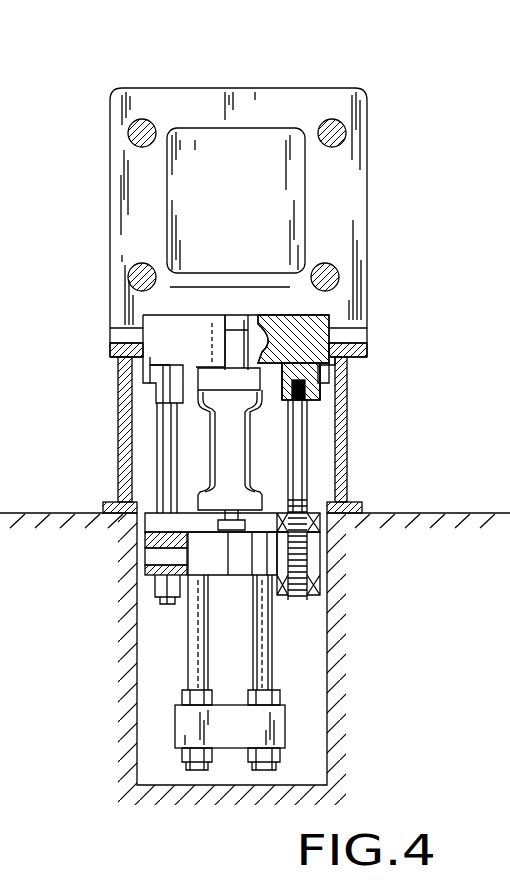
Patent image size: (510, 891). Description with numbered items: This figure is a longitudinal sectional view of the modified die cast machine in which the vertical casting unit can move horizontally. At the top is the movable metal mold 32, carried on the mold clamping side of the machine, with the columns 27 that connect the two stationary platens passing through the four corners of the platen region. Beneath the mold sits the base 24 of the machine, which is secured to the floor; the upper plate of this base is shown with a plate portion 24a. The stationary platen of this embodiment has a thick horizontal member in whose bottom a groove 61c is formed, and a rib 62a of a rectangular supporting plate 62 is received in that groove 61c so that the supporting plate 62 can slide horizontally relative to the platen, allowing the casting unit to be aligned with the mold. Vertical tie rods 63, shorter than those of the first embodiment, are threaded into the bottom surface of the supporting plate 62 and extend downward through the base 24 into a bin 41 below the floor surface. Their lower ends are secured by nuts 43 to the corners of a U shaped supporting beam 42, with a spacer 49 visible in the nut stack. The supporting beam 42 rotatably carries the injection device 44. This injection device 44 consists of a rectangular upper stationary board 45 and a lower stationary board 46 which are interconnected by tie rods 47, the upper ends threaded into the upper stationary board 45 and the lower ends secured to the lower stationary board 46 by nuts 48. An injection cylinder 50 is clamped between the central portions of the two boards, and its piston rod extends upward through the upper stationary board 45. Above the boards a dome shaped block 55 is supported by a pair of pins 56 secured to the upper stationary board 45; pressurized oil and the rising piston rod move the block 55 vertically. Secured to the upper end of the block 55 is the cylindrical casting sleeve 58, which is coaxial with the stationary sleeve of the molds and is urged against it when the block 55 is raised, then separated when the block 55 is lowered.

The base 24 is at (368, 391).
The flange plate 24a is at (352, 352).
The columns 27 is at (137, 120).
The movable metal mold 32 is at (246, 128).
The bin 41 is at (330, 676).
The supporting beam 42 is at (150, 584).
The nuts 43 is at (145, 538).
The injection device 44 is at (176, 449).
The upper stationary board 45 is at (228, 575).
The lower stationary board 46 is at (232, 748).
The tie rods 47 is at (188, 653).
The nuts 48 is at (182, 696).
The vertical pin 49 is at (146, 558).
The injection cylinder 50 is at (263, 631).
The dome shaped block 55 is at (210, 448).
The pins 56 is at (236, 506).
The casting sleeve 58 is at (238, 330).
The groove 61c is at (155, 372).
The supporting plate 62 is at (132, 388).
The rib 62a is at (150, 365).
The tie rods 63 is at (157, 448).